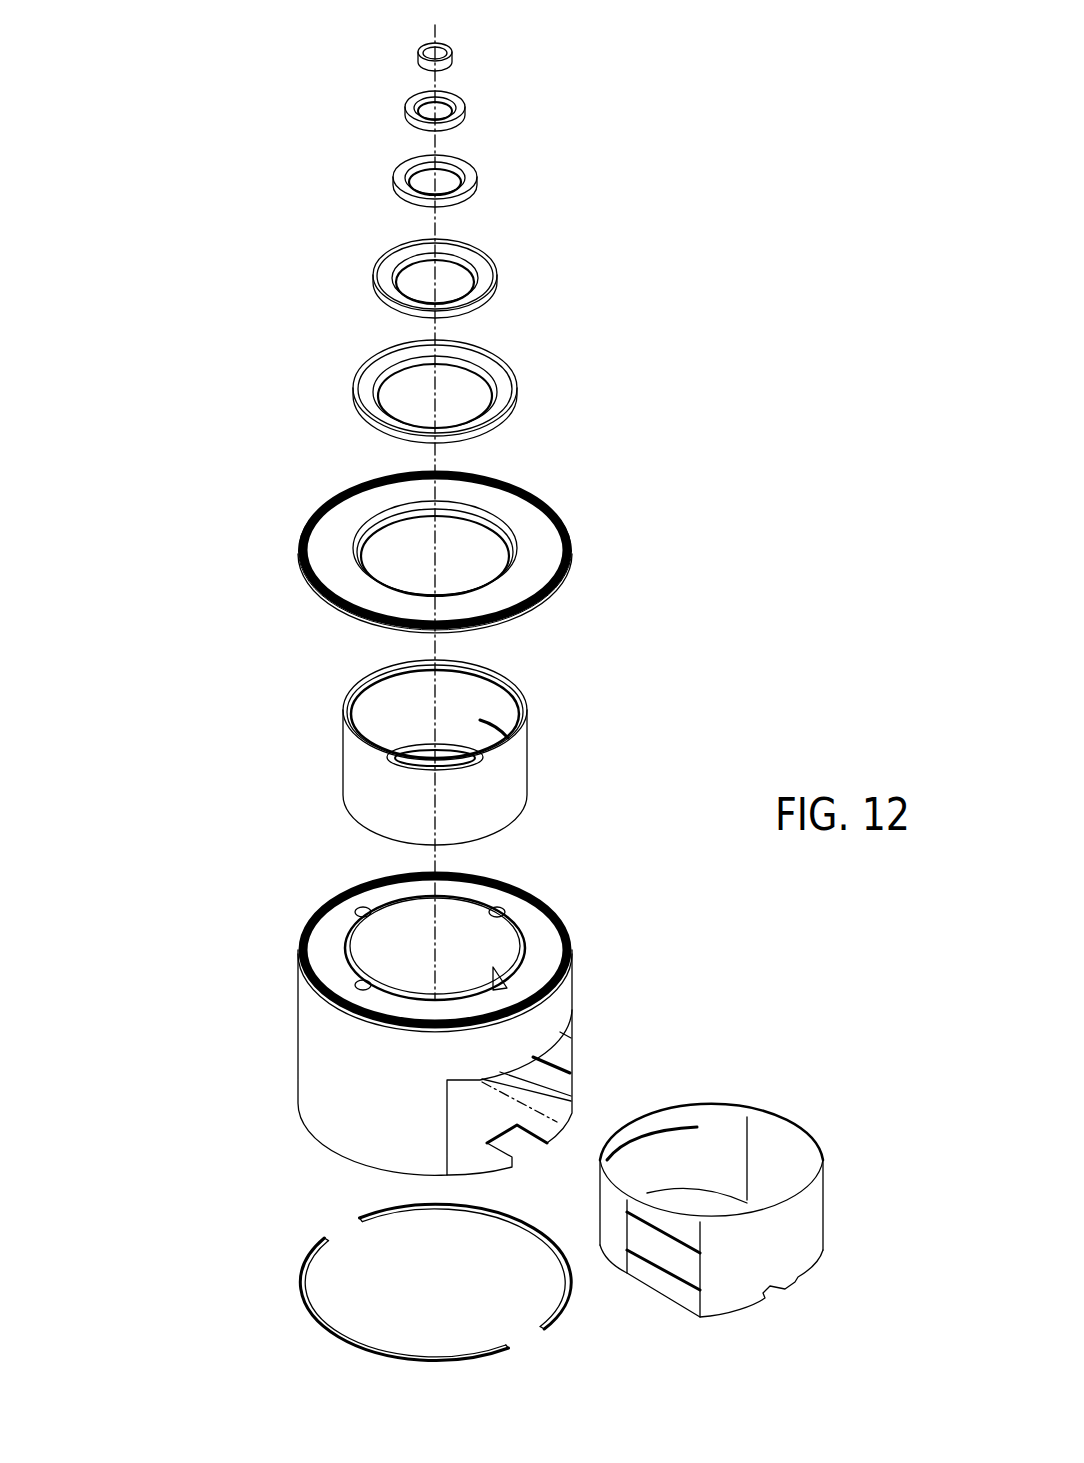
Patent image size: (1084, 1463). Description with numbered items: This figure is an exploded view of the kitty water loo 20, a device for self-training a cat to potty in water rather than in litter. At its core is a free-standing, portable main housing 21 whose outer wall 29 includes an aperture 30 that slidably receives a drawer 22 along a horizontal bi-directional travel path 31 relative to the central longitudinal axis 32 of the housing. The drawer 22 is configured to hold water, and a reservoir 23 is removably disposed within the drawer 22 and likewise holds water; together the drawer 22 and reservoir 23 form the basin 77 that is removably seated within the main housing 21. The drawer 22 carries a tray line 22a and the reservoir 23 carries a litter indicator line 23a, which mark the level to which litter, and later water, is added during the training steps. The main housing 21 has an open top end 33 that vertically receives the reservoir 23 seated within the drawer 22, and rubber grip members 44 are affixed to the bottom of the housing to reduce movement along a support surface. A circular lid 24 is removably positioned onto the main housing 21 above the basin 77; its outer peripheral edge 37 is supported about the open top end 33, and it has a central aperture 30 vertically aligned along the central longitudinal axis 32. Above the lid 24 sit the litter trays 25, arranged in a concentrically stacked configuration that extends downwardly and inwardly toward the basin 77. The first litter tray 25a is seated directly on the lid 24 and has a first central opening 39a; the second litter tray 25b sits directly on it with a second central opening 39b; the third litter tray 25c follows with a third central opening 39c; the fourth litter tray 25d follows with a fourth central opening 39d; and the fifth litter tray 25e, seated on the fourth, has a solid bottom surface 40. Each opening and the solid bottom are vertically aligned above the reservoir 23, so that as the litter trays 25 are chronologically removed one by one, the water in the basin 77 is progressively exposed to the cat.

The kitty water loo 20 is at (223, 448).
The main housing 21 is at (315, 1047).
The drawer 22 is at (790, 1153).
The tray line 22a is at (687, 1123).
The reservoir 23 is at (500, 775).
The litter indicator line 23a is at (503, 732).
The lid 24 is at (540, 535).
The litter trays 25 is at (522, 53).
The first litter tray 25a is at (375, 378).
The second litter tray 25b is at (390, 268).
The third litter tray 25c is at (400, 175).
The fourth litter tray 25d is at (408, 100).
The fifth litter tray 25e is at (420, 50).
The outer wall 29 is at (573, 990).
The aperture 30 is at (377, 566).
The horizontal bi-directional travel path 31 is at (580, 1138).
The central longitudinal axis 32 is at (433, 940).
The open top end 33 is at (395, 948).
The outer peripheral edge 37 is at (563, 578).
The first central opening 39a is at (470, 390).
The second central opening 39b is at (450, 280).
The third central opening 39c is at (445, 190).
The fourth central opening 39d is at (455, 117).
The solid bottom surface 40 is at (449, 53).
The rubber grip members 44 is at (447, 1207).
The basin 77 is at (304, 708).